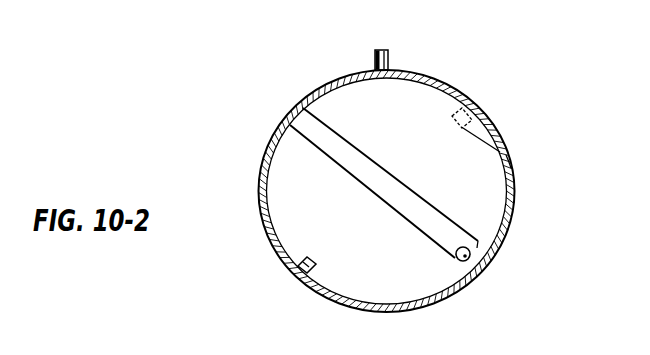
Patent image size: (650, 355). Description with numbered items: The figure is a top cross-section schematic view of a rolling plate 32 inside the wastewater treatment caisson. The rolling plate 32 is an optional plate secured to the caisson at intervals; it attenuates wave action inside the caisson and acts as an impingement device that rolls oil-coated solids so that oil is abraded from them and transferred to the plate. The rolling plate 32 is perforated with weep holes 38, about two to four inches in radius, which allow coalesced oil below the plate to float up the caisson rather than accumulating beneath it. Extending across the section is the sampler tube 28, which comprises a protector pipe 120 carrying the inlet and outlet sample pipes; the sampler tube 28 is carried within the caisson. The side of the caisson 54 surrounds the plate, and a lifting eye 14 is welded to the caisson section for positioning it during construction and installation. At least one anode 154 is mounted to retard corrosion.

The lifting eyes 14 is at (387, 50).
The sampler tube 28 is at (477, 248).
The rolling plate 32 is at (442, 102).
The weep holes 38 is at (462, 124).
The side of the caisson 54 is at (268, 147).
The protector pipe 120 is at (467, 265).
The anode 154 is at (511, 160).